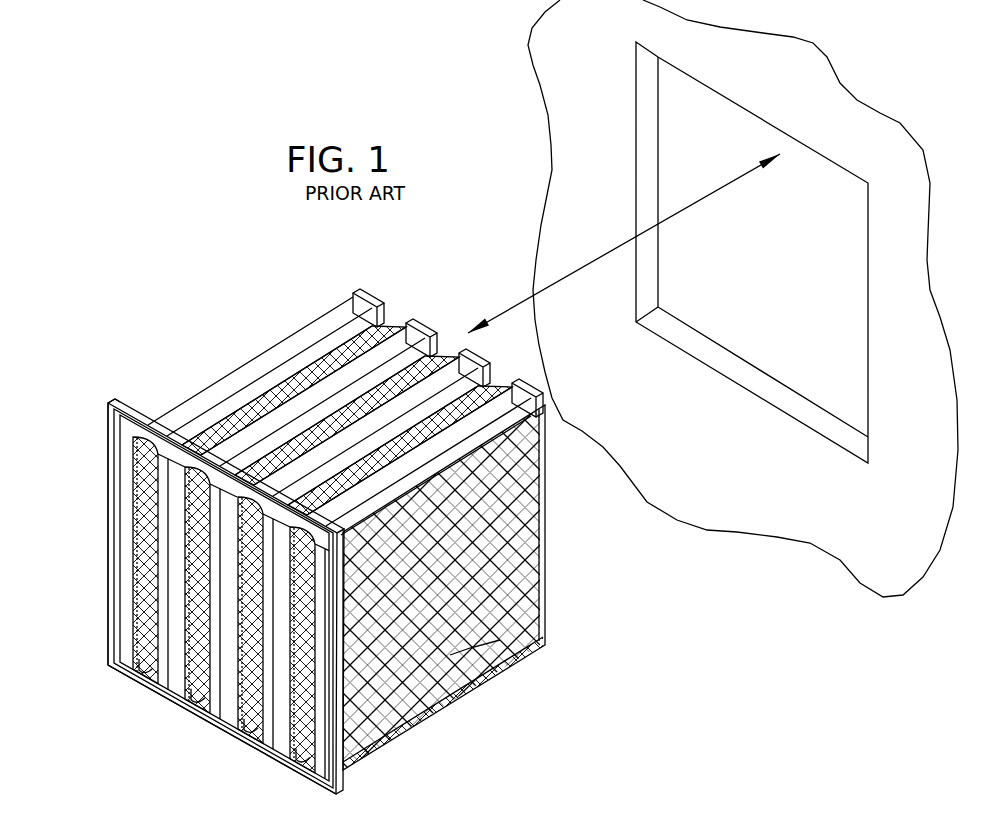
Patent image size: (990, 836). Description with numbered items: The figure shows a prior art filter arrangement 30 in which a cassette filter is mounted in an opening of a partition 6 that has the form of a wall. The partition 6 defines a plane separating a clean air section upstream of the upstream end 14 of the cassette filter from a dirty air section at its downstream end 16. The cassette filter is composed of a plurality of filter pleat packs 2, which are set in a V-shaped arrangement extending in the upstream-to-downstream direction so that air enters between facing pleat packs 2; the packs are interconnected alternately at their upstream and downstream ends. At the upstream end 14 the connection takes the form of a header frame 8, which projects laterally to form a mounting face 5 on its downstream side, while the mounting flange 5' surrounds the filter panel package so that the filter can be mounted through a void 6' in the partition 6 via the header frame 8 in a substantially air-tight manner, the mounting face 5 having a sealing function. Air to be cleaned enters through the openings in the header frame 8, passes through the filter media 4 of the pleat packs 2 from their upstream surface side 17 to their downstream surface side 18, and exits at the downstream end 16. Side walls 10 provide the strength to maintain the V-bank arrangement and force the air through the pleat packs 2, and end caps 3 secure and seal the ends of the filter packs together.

The bag filter assembly 30 is at (248, 208).
The side walls 10 is at (310, 350).
The mounting face 5 is at (193, 568).
The mounting flange 5' is at (81, 423).
The header frame 8 is at (123, 540).
The upstream end 14 is at (182, 717).
The filter media 4 is at (148, 652).
The upstream surface side 17 is at (353, 677).
The filter pleat packs 2 is at (385, 345).
The downstream surface side 18 is at (545, 540).
The end caps 3 is at (545, 488).
The downstream end 16 is at (450, 236).
The partition 6 is at (752, 298).
The void 6' is at (806, 252).